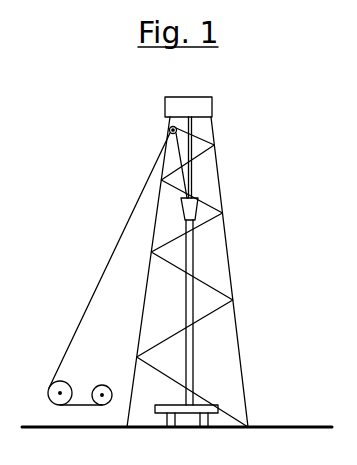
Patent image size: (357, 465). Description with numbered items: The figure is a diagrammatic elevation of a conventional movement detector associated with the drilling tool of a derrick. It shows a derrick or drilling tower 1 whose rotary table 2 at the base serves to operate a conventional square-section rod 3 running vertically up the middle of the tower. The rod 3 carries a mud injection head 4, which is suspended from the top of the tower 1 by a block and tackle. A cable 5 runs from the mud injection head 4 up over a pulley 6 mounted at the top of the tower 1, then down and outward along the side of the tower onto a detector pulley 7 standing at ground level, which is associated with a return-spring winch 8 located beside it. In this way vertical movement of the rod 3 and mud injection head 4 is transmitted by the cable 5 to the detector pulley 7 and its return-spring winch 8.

The drilling tower 1 is at (228, 252).
The rotary table 2 is at (187, 408).
The square-section rod 3 is at (193, 333).
The mud injection head 4 is at (198, 206).
The cable 5 is at (121, 239).
The pulley 6 is at (170, 129).
The detector pulley 7 is at (58, 392).
The return-spring winch 8 is at (102, 392).